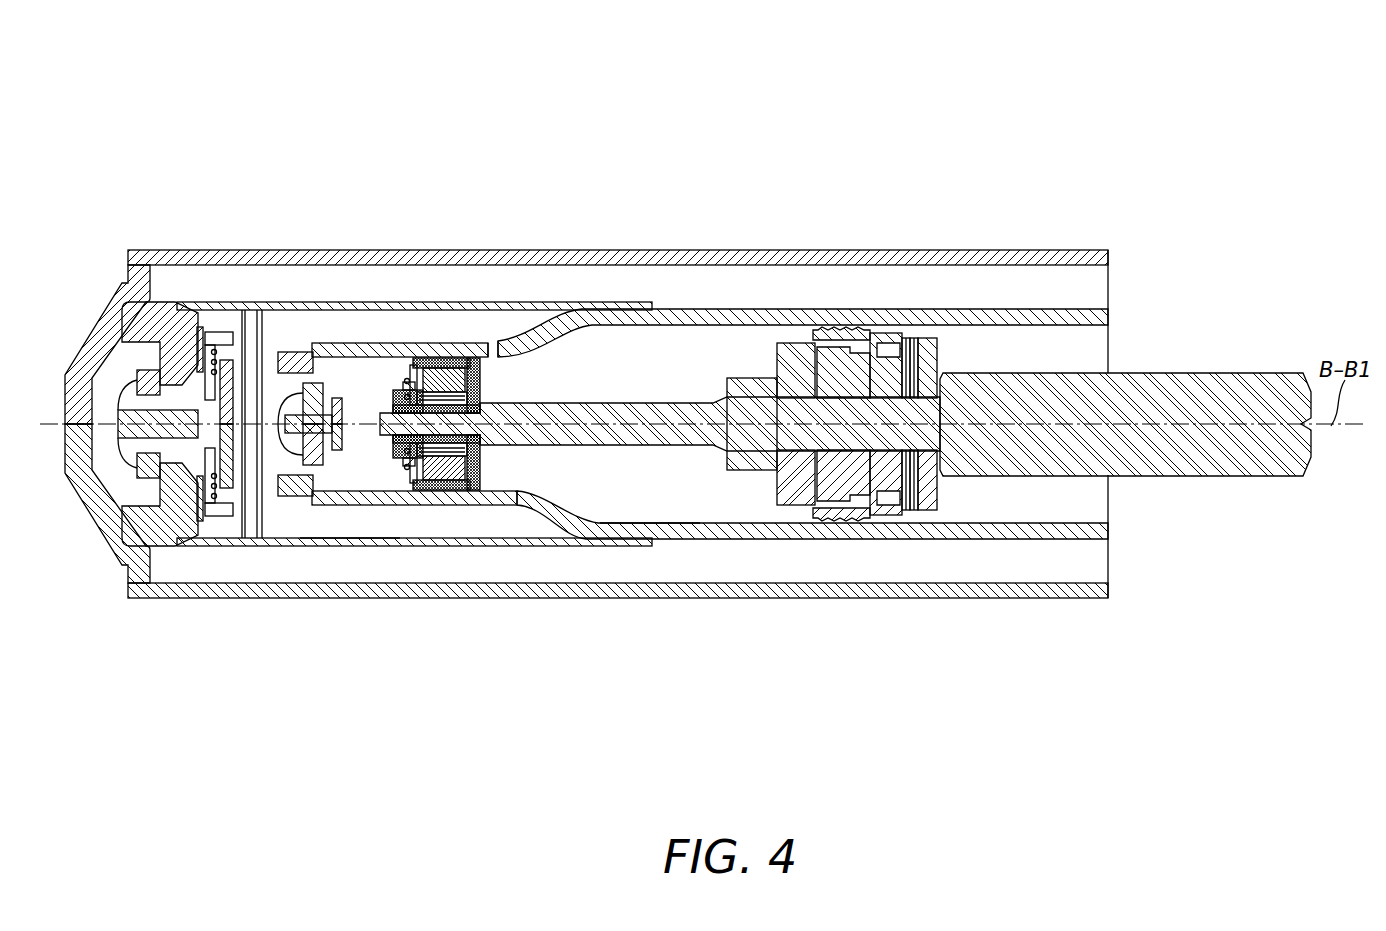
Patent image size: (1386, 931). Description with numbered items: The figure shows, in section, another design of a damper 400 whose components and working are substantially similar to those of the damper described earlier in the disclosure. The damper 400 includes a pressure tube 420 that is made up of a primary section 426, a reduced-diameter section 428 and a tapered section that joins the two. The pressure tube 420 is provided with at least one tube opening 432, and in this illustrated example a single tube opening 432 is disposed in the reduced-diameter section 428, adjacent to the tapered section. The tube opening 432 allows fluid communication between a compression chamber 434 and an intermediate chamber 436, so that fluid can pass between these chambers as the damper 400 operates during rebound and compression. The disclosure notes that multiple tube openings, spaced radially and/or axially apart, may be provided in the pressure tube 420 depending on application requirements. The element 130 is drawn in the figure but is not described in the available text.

The damper 400 is at (1188, 70).
The inner tube 130 is at (557, 309).
The pressure tube 420 is at (848, 300).
The primary section 426 is at (930, 538).
The reduced-diameter section 428 is at (423, 506).
The tube opening 432 is at (488, 330).
The compression chamber 434 is at (609, 500).
The intermediate chamber 436 is at (345, 545).